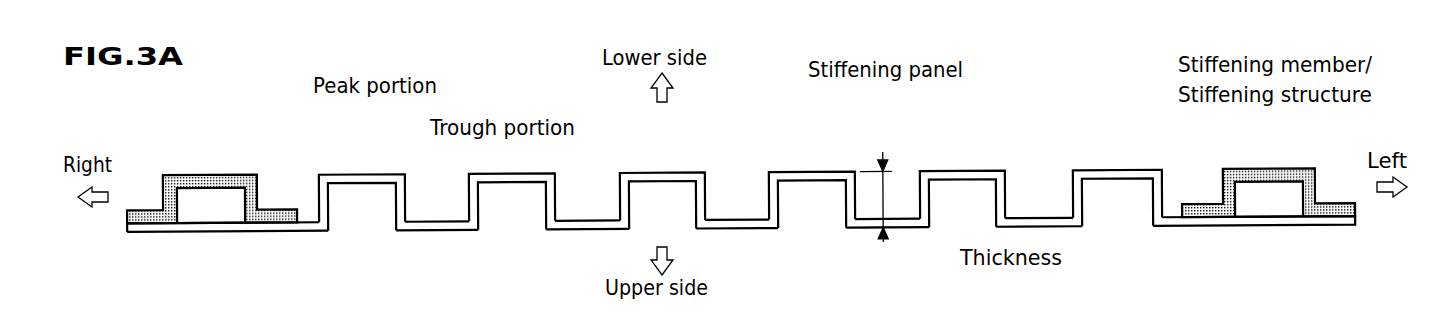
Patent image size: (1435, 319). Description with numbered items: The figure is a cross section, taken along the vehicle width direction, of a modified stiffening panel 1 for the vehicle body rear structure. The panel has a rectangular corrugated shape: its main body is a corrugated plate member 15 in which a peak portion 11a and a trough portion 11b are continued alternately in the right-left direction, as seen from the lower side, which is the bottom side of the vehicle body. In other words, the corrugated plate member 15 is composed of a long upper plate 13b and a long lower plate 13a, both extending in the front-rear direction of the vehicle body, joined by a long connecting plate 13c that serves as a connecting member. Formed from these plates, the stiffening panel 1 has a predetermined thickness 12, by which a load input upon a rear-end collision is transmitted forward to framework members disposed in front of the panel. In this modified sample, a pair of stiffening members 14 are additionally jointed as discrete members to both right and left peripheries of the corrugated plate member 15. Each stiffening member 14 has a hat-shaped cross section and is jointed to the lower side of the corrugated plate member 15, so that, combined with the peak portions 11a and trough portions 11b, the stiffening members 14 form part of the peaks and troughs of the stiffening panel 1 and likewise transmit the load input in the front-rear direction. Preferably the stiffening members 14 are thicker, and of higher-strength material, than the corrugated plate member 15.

The stiffening panel 1 is at (765, 132).
The peak portion 11a is at (238, 173).
The trough portion 11b is at (276, 207).
The predetermined thickness 12 is at (883, 198).
The lower plate 13a is at (964, 172).
The upper plate 13b is at (1040, 217).
The connecting plate 13c is at (1072, 192).
The stiffening member 14 is at (195, 174).
The corrugated plate member 15 is at (661, 172).